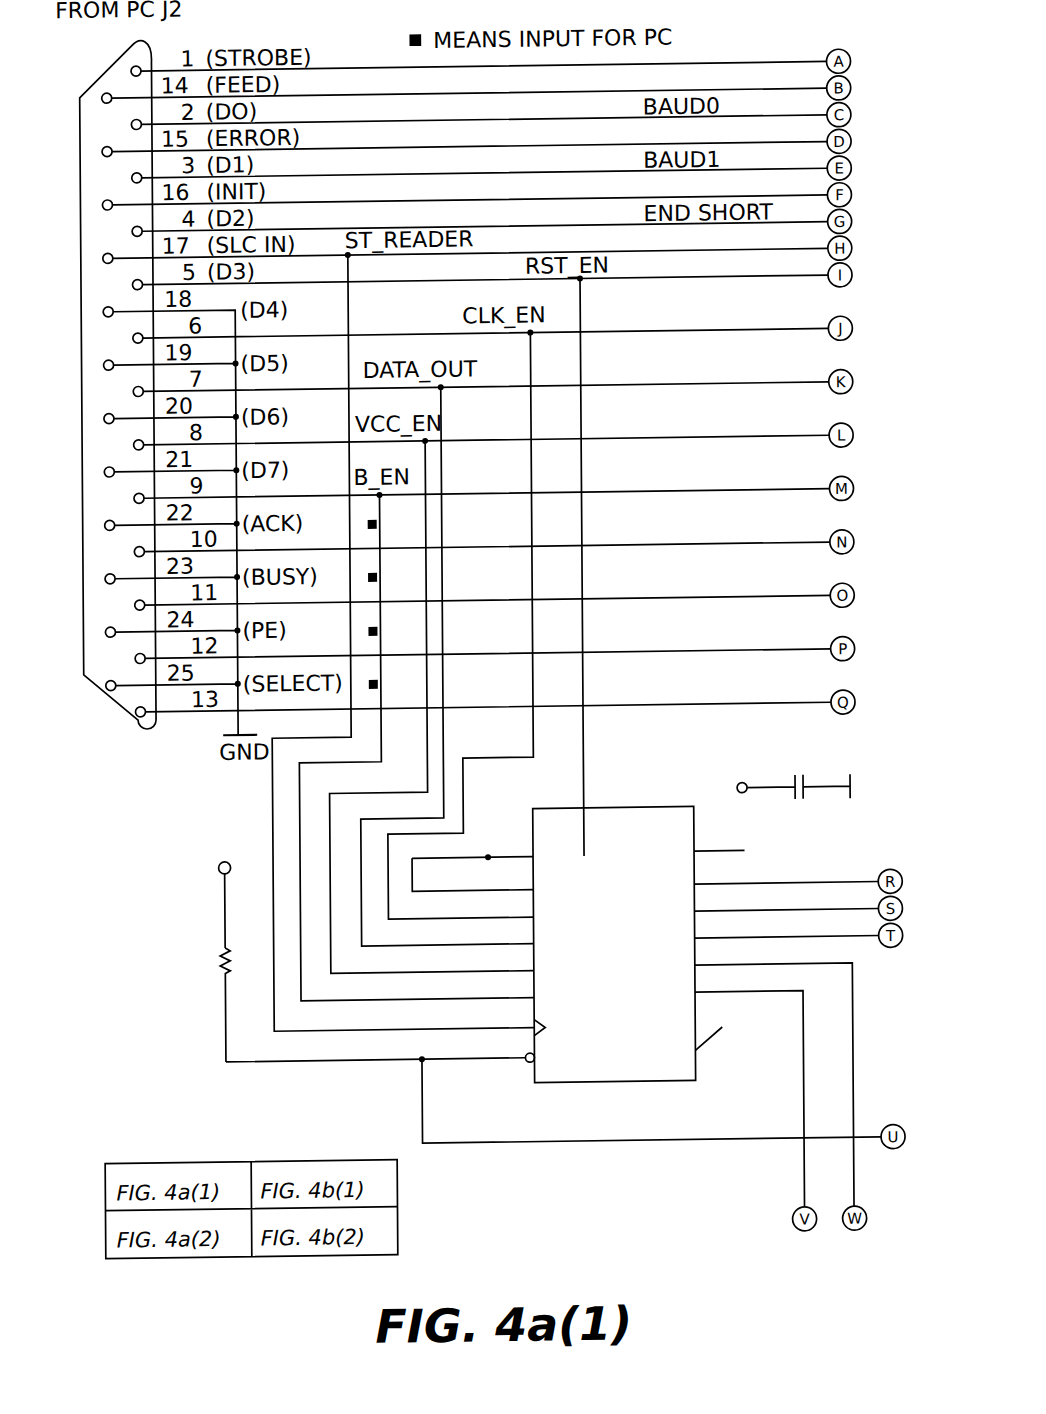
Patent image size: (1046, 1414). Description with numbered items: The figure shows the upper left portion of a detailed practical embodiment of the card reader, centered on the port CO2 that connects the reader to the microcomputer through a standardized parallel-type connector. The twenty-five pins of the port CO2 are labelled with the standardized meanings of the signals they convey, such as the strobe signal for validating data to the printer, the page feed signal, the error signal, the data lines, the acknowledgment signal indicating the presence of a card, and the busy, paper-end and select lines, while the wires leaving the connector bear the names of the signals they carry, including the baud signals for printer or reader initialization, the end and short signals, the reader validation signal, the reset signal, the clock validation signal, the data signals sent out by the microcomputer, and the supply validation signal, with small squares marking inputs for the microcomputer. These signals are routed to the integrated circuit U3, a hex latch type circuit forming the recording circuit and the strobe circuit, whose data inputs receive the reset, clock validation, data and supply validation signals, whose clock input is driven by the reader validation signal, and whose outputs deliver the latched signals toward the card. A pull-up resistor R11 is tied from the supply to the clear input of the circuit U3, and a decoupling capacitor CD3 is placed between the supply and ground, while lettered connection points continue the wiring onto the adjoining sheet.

The port CO2 is at (109, 66).
The 74HC174 hex D-type flip-flop latch U3 is at (615, 945).
The 22K pull-up resistor R11 is at (211, 958).
The 100nF decoupling capacitor CD3 is at (795, 788).